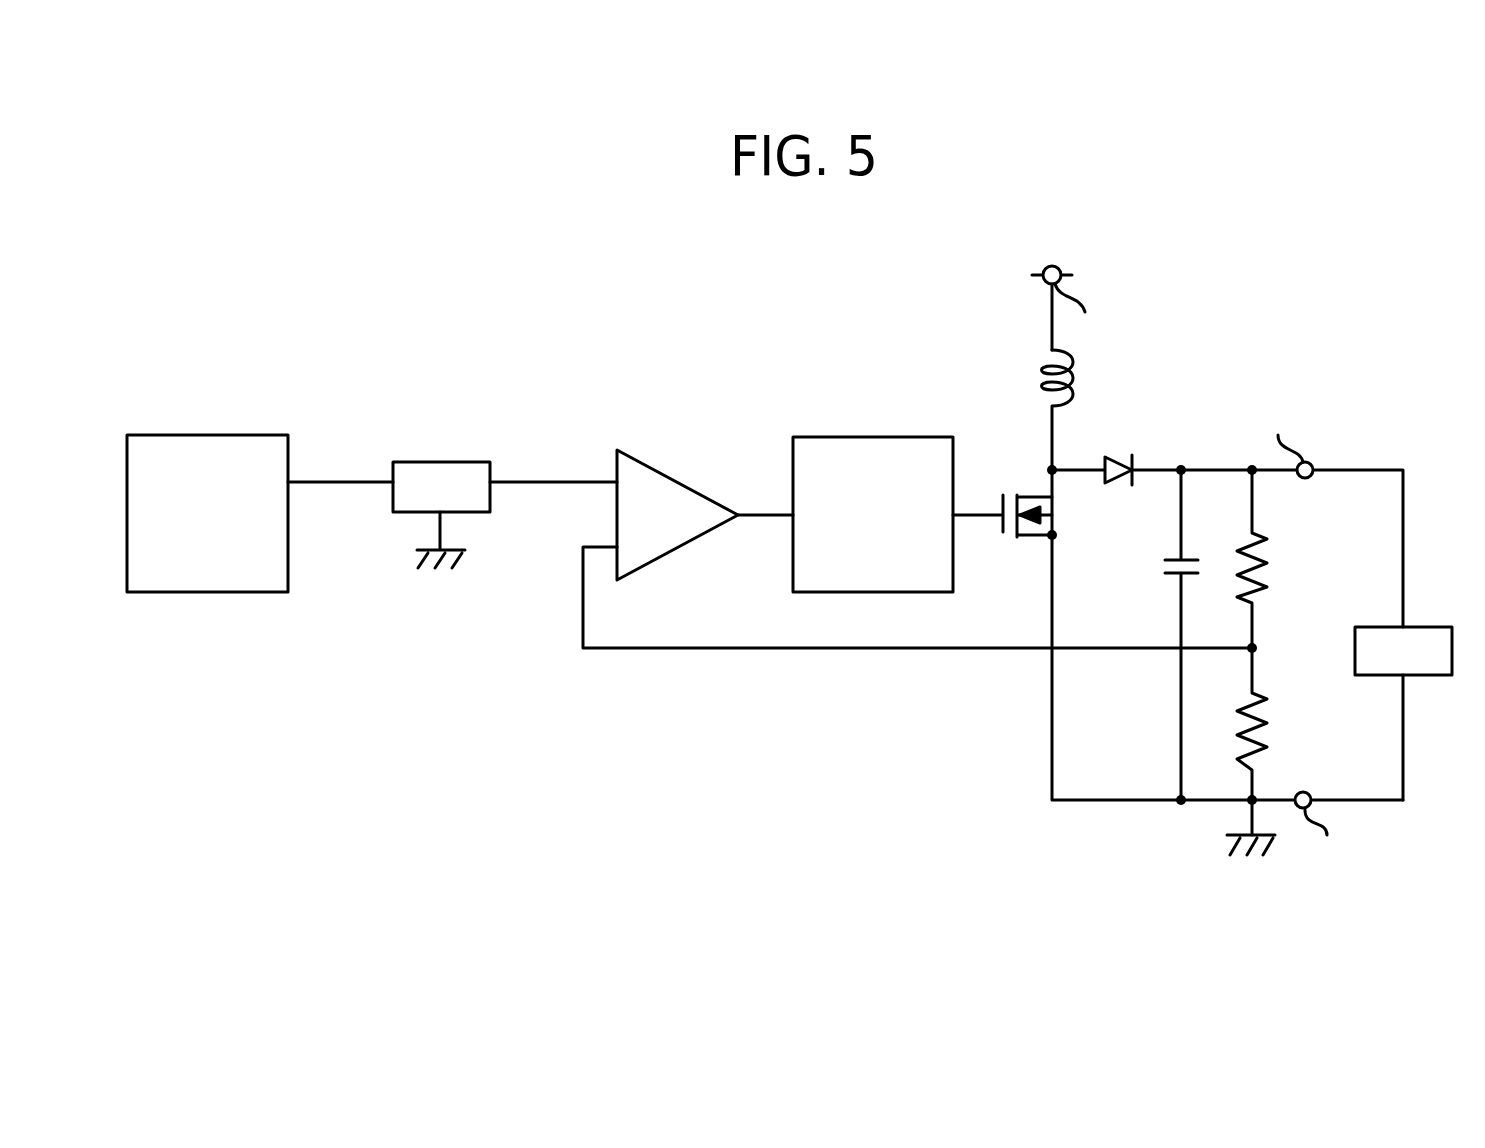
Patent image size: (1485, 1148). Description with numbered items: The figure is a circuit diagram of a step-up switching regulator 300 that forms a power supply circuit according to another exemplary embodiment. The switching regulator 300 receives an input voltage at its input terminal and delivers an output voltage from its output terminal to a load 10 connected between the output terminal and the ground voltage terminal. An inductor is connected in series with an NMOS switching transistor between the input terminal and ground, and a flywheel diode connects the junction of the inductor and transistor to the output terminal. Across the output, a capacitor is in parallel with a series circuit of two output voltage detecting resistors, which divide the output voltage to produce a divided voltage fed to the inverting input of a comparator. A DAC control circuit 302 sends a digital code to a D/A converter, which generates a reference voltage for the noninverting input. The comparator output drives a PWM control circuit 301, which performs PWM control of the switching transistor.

The switching regulator 300 is at (1240, 295).
The PWM control circuit 301 is at (845, 437).
The DAC control circuit 302 is at (178, 433).
The load 10 is at (1428, 627).